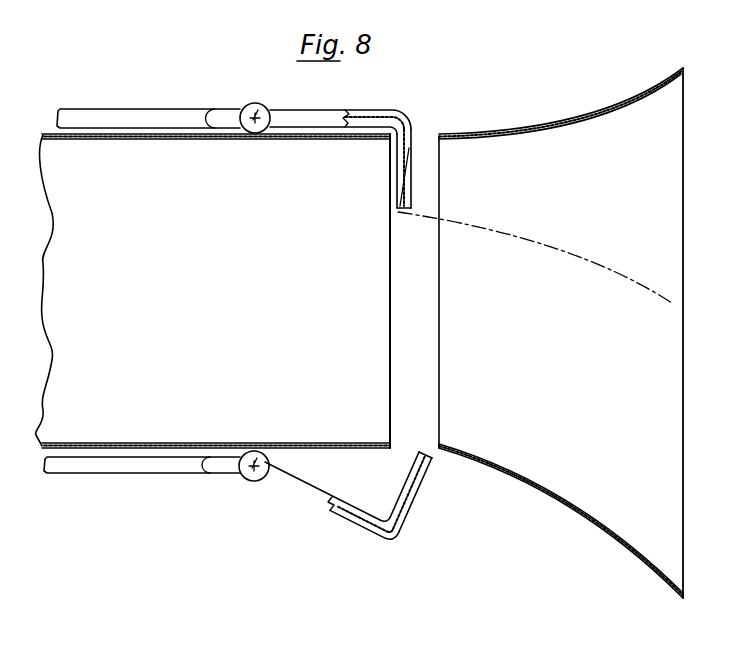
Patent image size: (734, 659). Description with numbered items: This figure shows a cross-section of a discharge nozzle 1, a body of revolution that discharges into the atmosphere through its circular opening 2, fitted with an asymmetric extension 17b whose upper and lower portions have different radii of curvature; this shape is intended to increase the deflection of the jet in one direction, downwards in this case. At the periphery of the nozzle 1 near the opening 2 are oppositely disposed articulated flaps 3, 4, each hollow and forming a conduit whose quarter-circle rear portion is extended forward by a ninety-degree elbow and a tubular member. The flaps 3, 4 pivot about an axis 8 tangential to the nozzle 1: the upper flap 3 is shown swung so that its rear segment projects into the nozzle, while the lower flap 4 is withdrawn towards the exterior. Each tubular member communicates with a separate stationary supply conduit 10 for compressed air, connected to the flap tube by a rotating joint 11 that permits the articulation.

The nozzle 1 is at (365, 448).
The circular opening 2 is at (391, 398).
The articulated flap 3 is at (368, 174).
The articulated flap 4 is at (368, 511).
The axis 8 is at (250, 103).
The supply conduit 10 is at (142, 118).
The rotating joint 11 is at (245, 110).
The asymmetric extension 17b is at (547, 122).